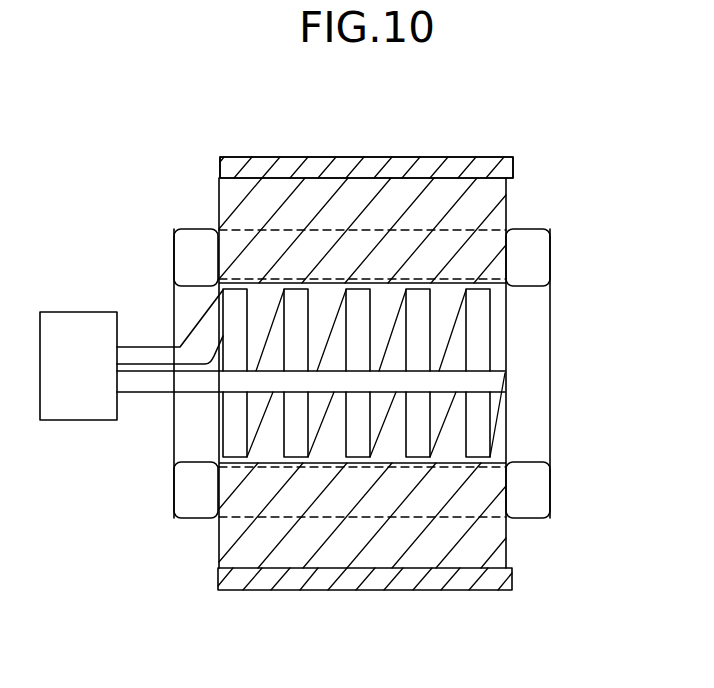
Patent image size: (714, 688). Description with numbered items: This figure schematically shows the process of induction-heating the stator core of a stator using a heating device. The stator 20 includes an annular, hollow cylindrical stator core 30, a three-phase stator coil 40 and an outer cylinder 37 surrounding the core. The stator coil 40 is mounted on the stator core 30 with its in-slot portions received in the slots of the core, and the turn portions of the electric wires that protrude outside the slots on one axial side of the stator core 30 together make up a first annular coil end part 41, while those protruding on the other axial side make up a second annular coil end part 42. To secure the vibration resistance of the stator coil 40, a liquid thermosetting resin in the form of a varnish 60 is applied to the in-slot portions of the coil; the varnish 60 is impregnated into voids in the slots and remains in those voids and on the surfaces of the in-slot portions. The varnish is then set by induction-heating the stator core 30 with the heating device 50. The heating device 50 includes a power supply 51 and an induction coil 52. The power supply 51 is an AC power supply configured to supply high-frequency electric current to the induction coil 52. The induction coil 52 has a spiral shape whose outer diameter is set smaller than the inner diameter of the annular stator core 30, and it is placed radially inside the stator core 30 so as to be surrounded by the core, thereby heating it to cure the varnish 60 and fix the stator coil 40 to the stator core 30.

The stator 20 is at (425, 157).
The stator core 30 is at (509, 210).
The outer cylinder 37 is at (287, 157).
The stator coil 40 is at (553, 307).
The first annular coil end part 41 is at (182, 497).
The second annular coil end part 42 is at (533, 505).
The heating device 50 is at (48, 240).
The power supply 51 is at (80, 320).
The induction coil 52 is at (145, 347).
The varnish 60 is at (290, 258).